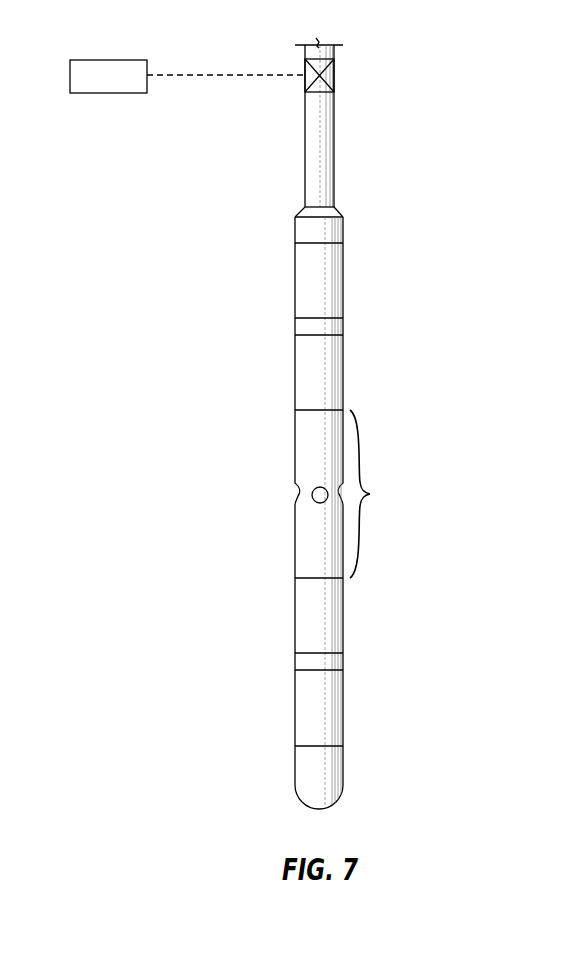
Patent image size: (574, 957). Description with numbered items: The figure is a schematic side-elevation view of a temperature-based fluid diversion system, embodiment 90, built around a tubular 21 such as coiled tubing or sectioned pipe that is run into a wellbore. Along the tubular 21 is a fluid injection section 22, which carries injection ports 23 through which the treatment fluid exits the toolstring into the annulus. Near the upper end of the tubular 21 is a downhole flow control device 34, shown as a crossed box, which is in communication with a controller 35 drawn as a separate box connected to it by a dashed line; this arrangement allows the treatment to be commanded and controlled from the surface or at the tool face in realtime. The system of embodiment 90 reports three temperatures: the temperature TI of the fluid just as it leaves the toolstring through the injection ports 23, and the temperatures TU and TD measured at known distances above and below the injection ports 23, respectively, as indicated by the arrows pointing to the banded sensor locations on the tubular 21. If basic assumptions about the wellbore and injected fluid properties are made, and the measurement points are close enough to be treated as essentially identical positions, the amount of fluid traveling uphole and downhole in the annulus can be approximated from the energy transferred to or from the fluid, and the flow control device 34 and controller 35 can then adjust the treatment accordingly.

The temperature-based system embodiment 90 is at (407, 192).
The tubular 21 is at (315, 185).
The downhole flow control device 34 is at (328, 77).
The controller 35 is at (95, 60).
The fluid injection section 22 is at (370, 494).
The injection ports 23 is at (342, 500).
The temperature above injection ports TU is at (292, 326).
The temperature of fluid exiting injection ports TI is at (281, 495).
The temperature below injection ports TD is at (292, 658).